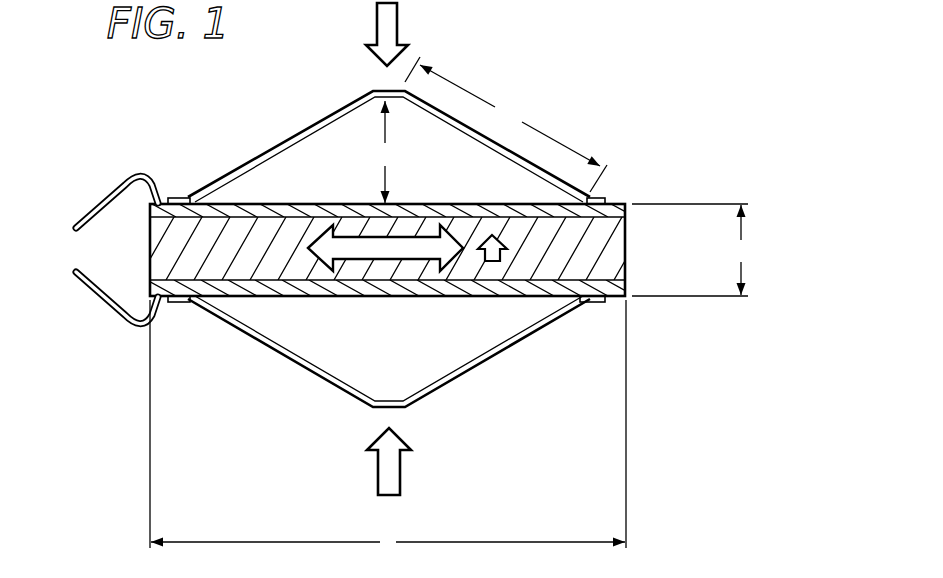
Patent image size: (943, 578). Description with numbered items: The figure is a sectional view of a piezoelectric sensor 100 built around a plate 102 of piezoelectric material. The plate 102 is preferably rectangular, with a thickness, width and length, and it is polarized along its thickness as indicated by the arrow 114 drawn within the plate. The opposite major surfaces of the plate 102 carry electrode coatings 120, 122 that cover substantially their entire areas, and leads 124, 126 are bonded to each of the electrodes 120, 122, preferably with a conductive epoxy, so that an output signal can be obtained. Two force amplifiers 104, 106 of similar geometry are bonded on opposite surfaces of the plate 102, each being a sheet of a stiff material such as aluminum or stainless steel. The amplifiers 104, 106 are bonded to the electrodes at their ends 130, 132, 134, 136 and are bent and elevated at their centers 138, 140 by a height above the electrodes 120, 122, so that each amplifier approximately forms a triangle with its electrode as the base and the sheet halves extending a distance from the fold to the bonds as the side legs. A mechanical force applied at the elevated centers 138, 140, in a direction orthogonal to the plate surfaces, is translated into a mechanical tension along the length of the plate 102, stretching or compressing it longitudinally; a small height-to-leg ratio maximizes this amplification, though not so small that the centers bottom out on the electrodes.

The piezoelectric sensor 100 is at (627, 80).
The plate 102 is at (417, 251).
The force amplifier 104 is at (409, 134).
The force amplifier 106 is at (386, 364).
The arrow 114 is at (492, 262).
The electrode coating 120 is at (633, 210).
The electrode coating 122 is at (633, 288).
The lead 124 is at (108, 195).
The lead 126 is at (110, 307).
The amplifier end 130 is at (603, 195).
The amplifier end 132 is at (182, 198).
The amplifier end 134 is at (597, 303).
The amplifier end 136 is at (180, 304).
The elevated center 138 is at (380, 91).
The elevated center 140 is at (380, 409).